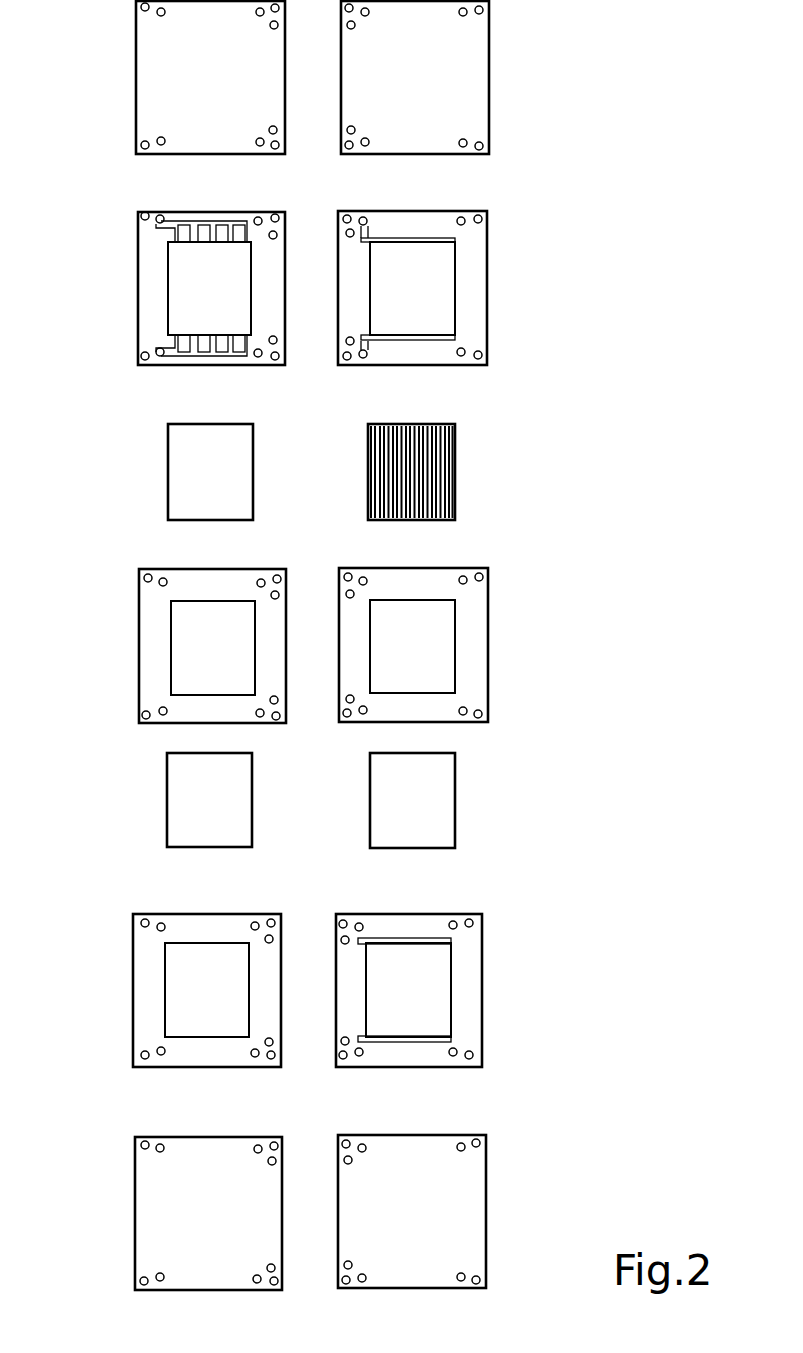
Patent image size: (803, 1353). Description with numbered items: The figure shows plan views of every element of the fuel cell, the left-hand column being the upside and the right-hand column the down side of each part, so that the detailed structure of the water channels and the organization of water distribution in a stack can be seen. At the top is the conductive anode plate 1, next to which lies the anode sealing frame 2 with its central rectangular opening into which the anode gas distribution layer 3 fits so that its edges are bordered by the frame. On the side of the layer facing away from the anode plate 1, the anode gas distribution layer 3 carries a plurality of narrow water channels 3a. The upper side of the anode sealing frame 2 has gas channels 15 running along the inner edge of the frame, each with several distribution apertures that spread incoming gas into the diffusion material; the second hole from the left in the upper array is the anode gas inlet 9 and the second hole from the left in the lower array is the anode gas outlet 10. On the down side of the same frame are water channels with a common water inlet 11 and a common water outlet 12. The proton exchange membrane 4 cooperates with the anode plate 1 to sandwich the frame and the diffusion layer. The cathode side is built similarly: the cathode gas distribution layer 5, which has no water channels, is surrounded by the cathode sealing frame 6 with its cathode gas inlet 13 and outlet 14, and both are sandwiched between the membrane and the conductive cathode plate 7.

The anode plate 1 is at (136, 68).
The anode sealing frame 2 is at (138, 284).
The anode gas distribution layer 3 is at (168, 466).
The water channels 3a is at (456, 472).
The proton exchange membrane 4 is at (139, 640).
The cathode gas distribution layer 5 is at (167, 800).
The cathode sealing frame 6 is at (133, 990).
The cathode plate 7 is at (135, 1222).
The anode gas inlet 9 is at (138, 221).
The anode gas outlet 10 is at (138, 355).
The water inlet 11 is at (364, 218).
The water outlet 12 is at (363, 358).
The cathode gas inlet 13 is at (338, 943).
The cathode gas outlet 14 is at (338, 1056).
The gas channels 15 is at (190, 223).